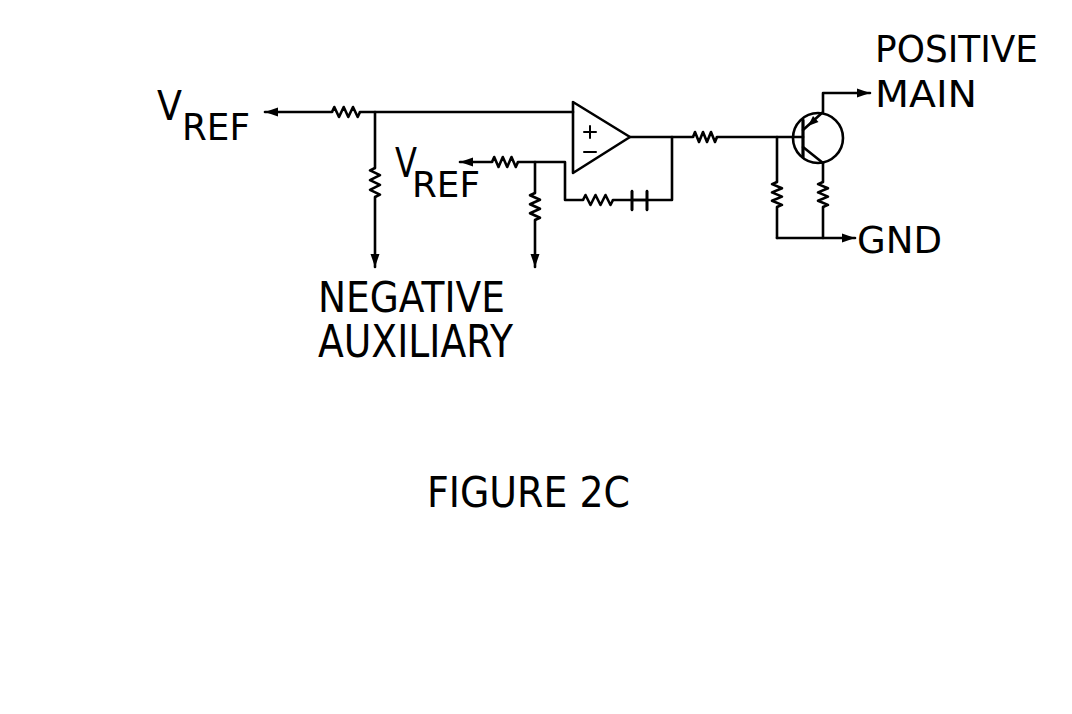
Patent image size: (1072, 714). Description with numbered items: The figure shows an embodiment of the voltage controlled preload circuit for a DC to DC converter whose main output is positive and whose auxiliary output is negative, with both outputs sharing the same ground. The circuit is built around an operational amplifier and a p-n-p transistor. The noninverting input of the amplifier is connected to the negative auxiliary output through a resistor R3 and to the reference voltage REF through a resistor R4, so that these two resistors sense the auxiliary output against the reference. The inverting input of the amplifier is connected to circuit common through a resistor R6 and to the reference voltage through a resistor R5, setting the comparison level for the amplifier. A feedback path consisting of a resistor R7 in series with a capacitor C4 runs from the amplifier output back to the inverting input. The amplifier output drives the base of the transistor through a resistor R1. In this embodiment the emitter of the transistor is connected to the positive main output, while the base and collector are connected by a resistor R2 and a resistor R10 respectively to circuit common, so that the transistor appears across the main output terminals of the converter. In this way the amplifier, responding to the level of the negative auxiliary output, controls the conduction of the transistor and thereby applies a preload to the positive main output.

The resistor R1 is at (712, 112).
The resistor R2 is at (751, 196).
The resistor R3 is at (351, 189).
The resistor R4 is at (348, 82).
The resistor R5 is at (507, 140).
The resistor R6 is at (513, 210).
The resistor R7 is at (596, 226).
The resistor R10 is at (854, 194).
The capacitor C4 is at (644, 224).